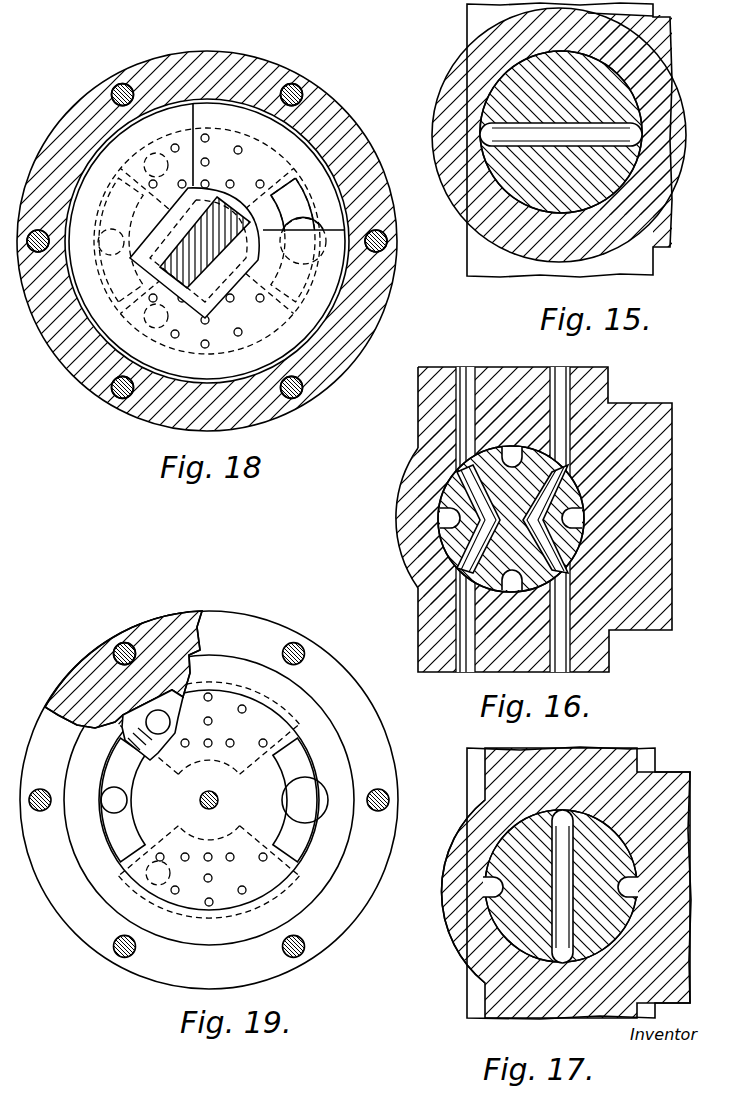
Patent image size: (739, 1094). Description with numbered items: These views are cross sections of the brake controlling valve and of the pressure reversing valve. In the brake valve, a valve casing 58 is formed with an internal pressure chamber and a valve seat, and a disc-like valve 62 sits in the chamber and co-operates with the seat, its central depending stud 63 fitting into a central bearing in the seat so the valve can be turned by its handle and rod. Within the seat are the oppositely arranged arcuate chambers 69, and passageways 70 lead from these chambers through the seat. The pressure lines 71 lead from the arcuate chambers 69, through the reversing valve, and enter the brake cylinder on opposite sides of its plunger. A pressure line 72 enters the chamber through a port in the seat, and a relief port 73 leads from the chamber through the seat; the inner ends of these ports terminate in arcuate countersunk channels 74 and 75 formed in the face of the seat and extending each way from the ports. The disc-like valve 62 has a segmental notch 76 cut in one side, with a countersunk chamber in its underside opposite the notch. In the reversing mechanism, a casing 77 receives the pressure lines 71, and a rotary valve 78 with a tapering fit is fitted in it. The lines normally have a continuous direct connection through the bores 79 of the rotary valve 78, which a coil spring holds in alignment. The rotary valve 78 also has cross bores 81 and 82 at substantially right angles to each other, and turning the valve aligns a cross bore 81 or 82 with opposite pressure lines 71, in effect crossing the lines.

In FIG. 18, the valve casing 58 is at (335, 378).
In FIG. 19, the valve casing 58 is at (313, 648).
In FIG. 18, the disc-like valve 62 is at (322, 303).
In FIG. 19, the central depending stud 63 is at (213, 798).
In FIG. 18, the arcuate chambers 69 is at (223, 120).
In FIG. 19, the arcuate chambers 69 is at (170, 693).
In FIG. 18, the passageways 70 is at (262, 180).
In FIG. 19, the passageways 70 is at (211, 694).
In FIG. 18, the pressure lines 71 is at (150, 165).
In FIG. 19, the pressure lines 71 is at (146, 720).
In FIG. 18, the pressure line 72 is at (312, 220).
In FIG. 19, the pressure line 72 is at (300, 790).
In FIG. 18, the relief port 73 is at (101, 240).
In FIG. 19, the relief port 73 is at (103, 803).
In FIG. 18, the arcuate countersunk channel 74 is at (295, 203).
In FIG. 19, the arcuate countersunk channel 74 is at (293, 755).
In FIG. 18, the arcuate countersunk channel 75 is at (127, 215).
In FIG. 19, the arcuate countersunk channel 75 is at (122, 825).
In FIG. 18, the segmental notch 76 is at (267, 130).
In FIG. 19, the segmental notch 76 is at (209, 800).
In FIG. 15, the casing 77 is at (462, 213).
In FIG. 16, the casing 77 is at (399, 504).
In FIG. 17, the casing 77 is at (467, 821).
In FIG. 15, the rotary valve 78 is at (493, 105).
In FIG. 16, the rotary valve 78 is at (452, 542).
In FIG. 17, the rotary valve 78 is at (646, 842).
In FIG. 16, the bores 79 is at (468, 471).
In FIG. 15, the cross bore 81 is at (637, 137).
In FIG. 16, the cross bore 81 is at (576, 520).
In FIG. 17, the cross bore 81 is at (633, 887).
In FIG. 16, the cross bore 82 is at (513, 581).
In FIG. 17, the cross bore 82 is at (562, 957).